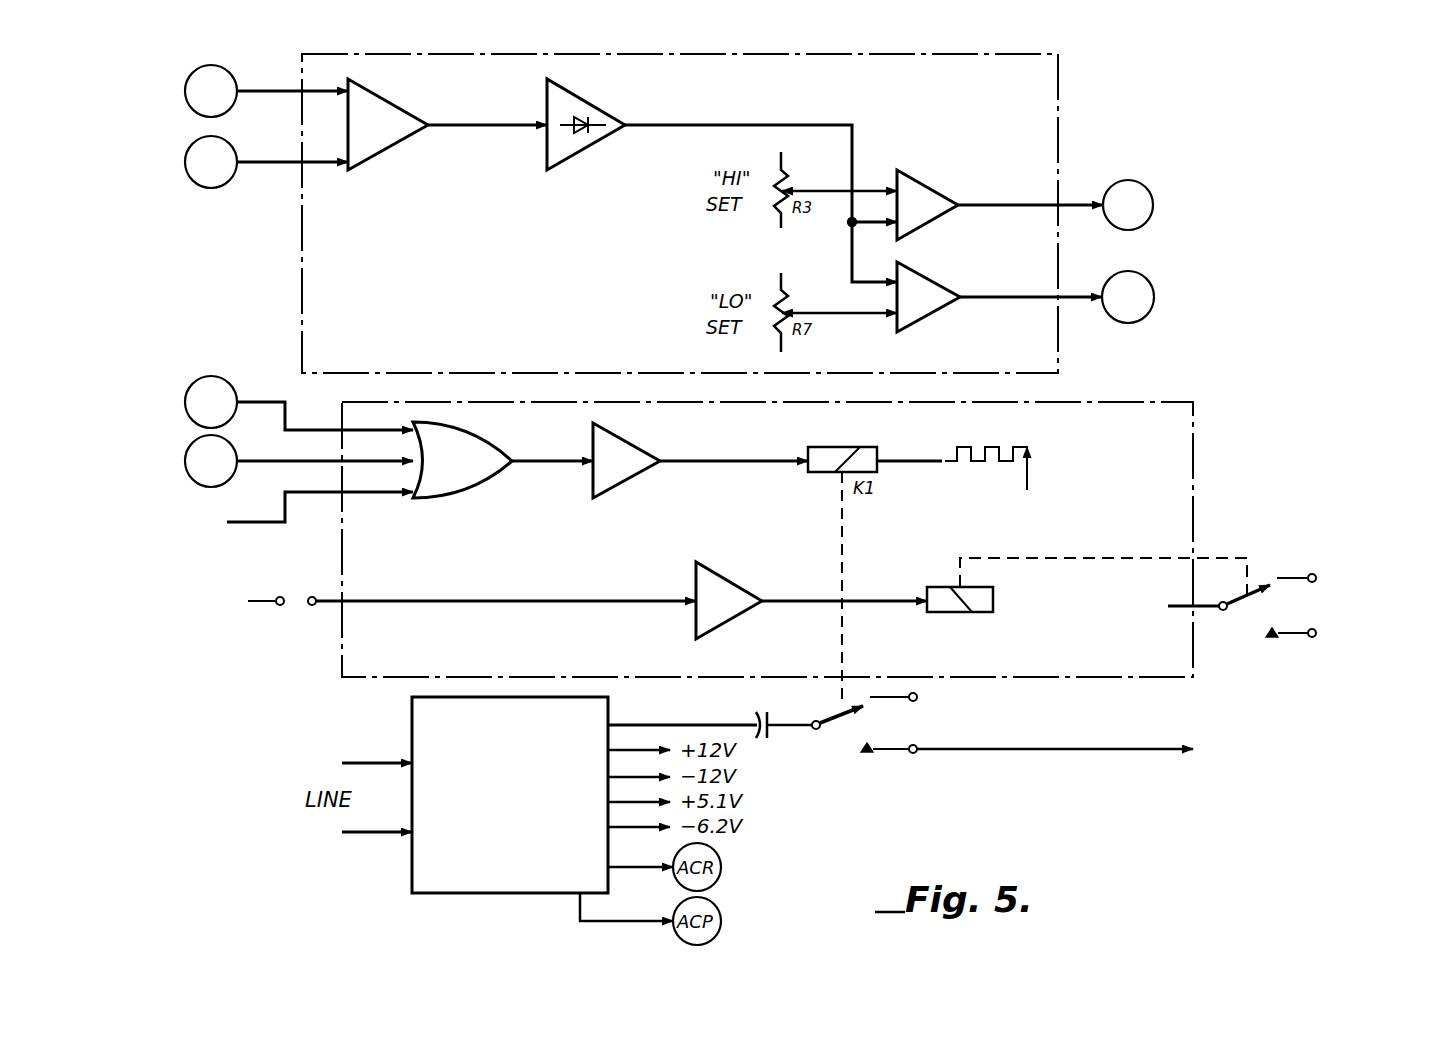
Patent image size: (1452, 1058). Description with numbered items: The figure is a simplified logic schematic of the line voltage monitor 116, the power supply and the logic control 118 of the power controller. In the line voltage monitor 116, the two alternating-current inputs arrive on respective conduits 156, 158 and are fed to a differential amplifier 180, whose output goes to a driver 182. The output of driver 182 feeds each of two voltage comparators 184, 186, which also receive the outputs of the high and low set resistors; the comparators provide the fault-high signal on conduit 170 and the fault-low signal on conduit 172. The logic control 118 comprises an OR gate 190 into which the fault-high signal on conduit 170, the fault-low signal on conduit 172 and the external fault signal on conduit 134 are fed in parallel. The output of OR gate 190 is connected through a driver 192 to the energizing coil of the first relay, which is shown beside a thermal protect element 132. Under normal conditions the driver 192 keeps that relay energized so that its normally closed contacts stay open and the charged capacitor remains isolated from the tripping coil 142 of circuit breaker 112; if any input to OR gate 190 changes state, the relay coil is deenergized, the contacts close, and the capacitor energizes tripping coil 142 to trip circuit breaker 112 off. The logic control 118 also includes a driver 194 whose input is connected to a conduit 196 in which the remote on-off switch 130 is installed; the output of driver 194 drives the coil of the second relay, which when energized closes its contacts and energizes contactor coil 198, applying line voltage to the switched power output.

The line voltage monitor 116 is at (1058, 90).
The logic control 118 is at (342, 565).
The conduit 156 is at (250, 91).
The conduit 158 is at (250, 162).
The differential amplifier 180 is at (395, 105).
The driver 182 is at (596, 105).
The voltage comparator 184 is at (930, 222).
The voltage comparator 186 is at (938, 282).
The conduit 170 is at (1075, 205).
The conduit 172 is at (1075, 297).
The conduit 134 is at (252, 524).
The OR gate 190 is at (478, 497).
The driver 192 is at (638, 440).
The driver 194 is at (727, 575).
The conduit 196 is at (357, 601).
The remote ON/OFF switch 130 is at (298, 612).
The thermal protect 132 is at (1037, 460).
The contactor coil 198 is at (1185, 628).
The tripping coil 142 is at (1009, 761).
The circuit breaker 112 is at (1307, 814).